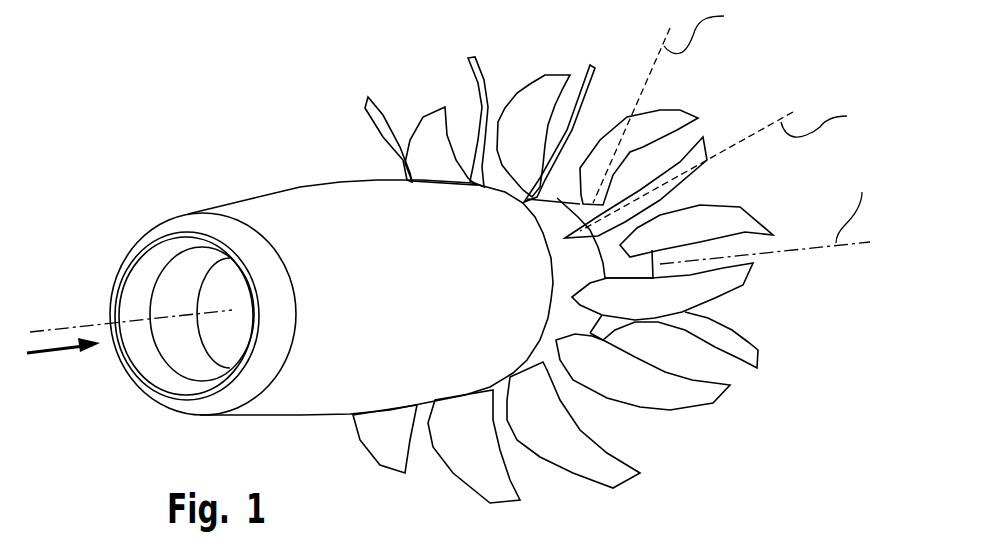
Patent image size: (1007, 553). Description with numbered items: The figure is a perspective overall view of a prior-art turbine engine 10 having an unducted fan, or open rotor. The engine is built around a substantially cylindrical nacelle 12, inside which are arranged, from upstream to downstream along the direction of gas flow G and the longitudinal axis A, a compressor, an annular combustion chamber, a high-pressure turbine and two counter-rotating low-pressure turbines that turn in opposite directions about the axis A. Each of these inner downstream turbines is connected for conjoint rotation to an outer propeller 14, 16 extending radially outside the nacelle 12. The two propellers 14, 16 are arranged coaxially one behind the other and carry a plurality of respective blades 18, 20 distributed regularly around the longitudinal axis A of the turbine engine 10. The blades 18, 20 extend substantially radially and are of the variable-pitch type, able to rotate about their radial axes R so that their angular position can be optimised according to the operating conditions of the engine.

The turbine engine 10 is at (212, 124).
The nacelle 12 is at (325, 372).
The outer propeller 14 is at (692, 415).
The outer propeller 16 is at (758, 342).
The blades 18 is at (592, 68).
The blades 20 is at (698, 118).